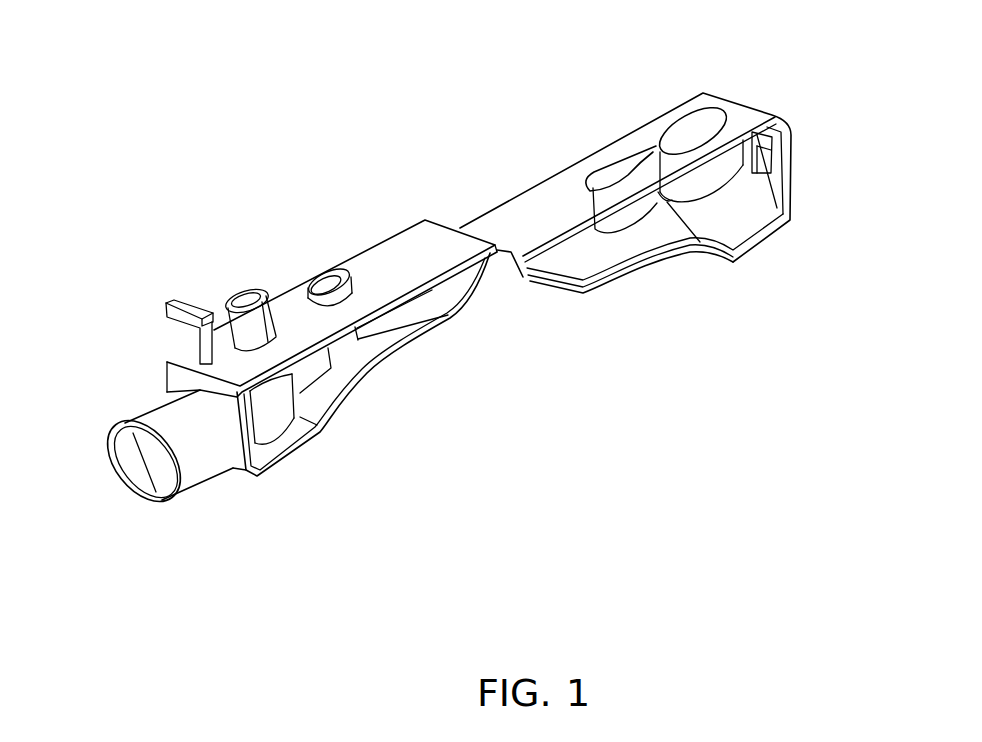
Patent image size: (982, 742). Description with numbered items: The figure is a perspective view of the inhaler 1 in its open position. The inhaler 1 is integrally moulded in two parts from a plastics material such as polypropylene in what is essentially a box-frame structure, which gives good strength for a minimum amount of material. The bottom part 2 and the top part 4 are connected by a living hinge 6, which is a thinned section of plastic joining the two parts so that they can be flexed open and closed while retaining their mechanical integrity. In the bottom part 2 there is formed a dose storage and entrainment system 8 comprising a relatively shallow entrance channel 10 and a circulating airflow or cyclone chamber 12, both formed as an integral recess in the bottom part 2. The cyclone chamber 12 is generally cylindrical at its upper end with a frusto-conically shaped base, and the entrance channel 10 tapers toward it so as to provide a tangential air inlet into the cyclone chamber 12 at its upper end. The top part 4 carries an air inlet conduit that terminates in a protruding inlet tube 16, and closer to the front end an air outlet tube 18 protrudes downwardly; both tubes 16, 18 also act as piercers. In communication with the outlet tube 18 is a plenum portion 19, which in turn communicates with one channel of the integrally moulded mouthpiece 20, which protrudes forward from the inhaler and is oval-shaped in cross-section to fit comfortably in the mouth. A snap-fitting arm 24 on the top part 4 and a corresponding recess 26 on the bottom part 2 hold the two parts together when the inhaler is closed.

The inhaler 1 is at (547, 345).
The bottom part 2 is at (517, 220).
The top part 4 is at (381, 276).
The living hinge 6 is at (497, 253).
The dose storage and entrainment system 8 is at (647, 145).
The entrance channel 10 is at (608, 172).
The cyclone chamber 12 is at (702, 128).
The inlet tube 16 is at (330, 280).
The air outlet tube 18 is at (238, 302).
The plenum portion 19 is at (280, 410).
The mouthpiece 20 is at (163, 480).
The snap-fitting arm 24 is at (177, 320).
The recess 26 is at (757, 162).